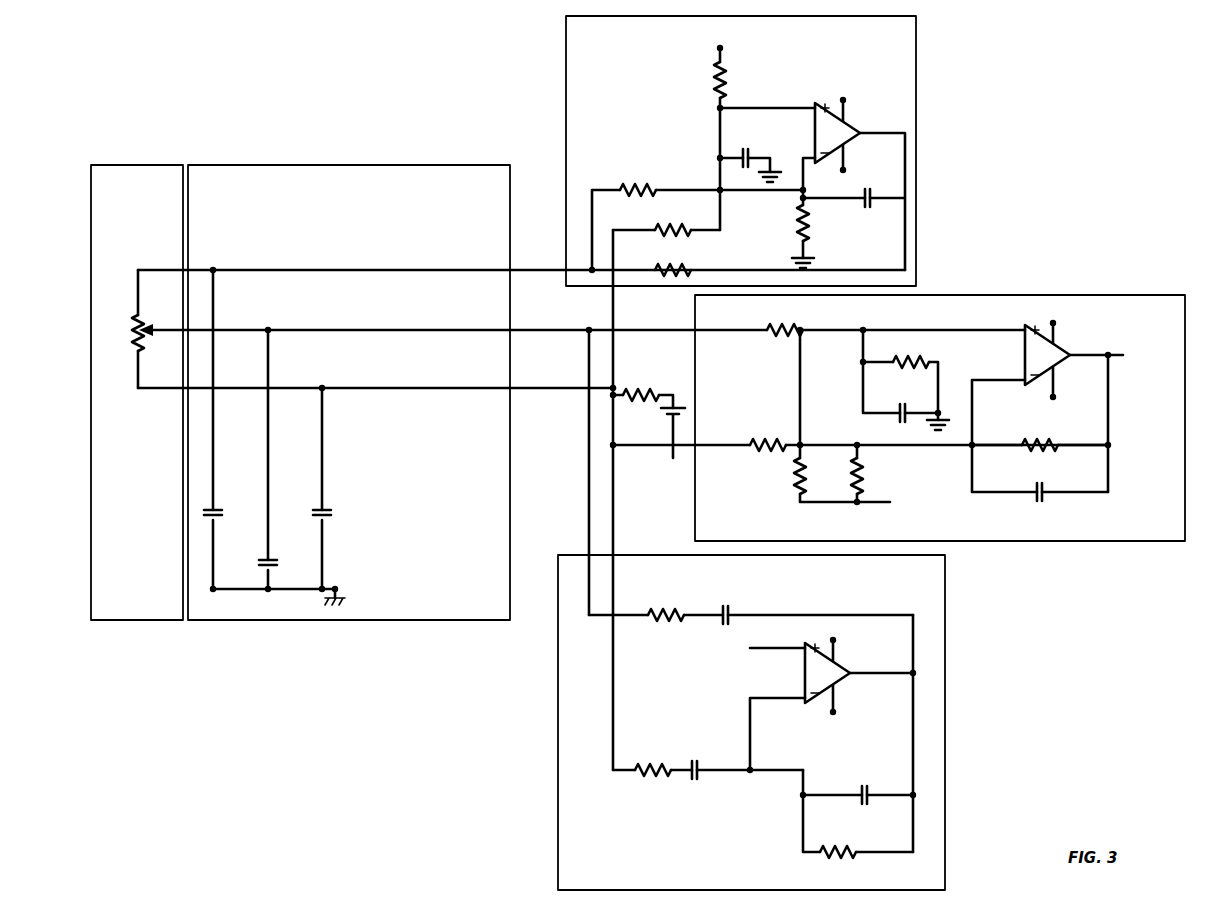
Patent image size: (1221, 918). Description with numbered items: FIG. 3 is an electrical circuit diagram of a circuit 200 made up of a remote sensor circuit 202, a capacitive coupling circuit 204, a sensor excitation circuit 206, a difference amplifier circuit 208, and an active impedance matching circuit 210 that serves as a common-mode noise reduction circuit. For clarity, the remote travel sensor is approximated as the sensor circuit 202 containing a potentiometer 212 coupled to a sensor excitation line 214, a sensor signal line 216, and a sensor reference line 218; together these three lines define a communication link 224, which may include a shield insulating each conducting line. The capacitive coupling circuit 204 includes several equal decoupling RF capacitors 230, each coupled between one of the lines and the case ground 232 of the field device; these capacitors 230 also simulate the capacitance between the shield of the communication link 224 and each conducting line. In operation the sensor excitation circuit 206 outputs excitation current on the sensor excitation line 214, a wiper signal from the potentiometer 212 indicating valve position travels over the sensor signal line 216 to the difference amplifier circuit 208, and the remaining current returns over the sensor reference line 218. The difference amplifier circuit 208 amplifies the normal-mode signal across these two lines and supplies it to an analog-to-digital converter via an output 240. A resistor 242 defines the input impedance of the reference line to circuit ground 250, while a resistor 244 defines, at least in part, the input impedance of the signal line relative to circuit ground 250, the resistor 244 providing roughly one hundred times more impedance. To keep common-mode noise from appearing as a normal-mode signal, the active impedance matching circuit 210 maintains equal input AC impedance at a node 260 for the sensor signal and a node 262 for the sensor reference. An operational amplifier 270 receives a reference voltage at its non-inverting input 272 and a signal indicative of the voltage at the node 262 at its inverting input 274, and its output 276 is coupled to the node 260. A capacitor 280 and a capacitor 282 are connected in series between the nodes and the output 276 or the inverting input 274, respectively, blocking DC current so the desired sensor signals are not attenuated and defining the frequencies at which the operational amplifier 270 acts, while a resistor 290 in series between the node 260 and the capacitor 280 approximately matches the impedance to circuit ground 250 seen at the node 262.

The circuit 200 is at (415, 93).
The remote sensor circuit 202 is at (91, 592).
The capacitive coupling circuit 204 is at (336, 165).
The sensor excitation circuit 206 is at (916, 128).
The difference amplifier circuit 208 is at (940, 446).
The active impedance matching circuit 210 is at (783, 722).
The potentiometer 212 is at (138, 338).
The sensor excitation line 214 is at (346, 268).
The sensor signal line 216 is at (366, 328).
The sensor reference line 218 is at (391, 386).
The communication link 224 is at (403, 210).
The decoupling RF capacitor 230 is at (208, 522).
The case ground 232 is at (326, 600).
The output 240 is at (1118, 352).
The resistor 242 is at (637, 398).
The resistor 244 is at (770, 338).
The circuit ground 250 is at (668, 447).
The node 260 is at (543, 328).
The node 262 is at (616, 468).
The operational amplifier 270 is at (808, 702).
The non-inverting input 272 is at (804, 648).
The inverting input 274 is at (771, 696).
The output 276 is at (880, 670).
The capacitor 280 is at (733, 612).
The capacitor 282 is at (688, 774).
The resistor 290 is at (663, 620).